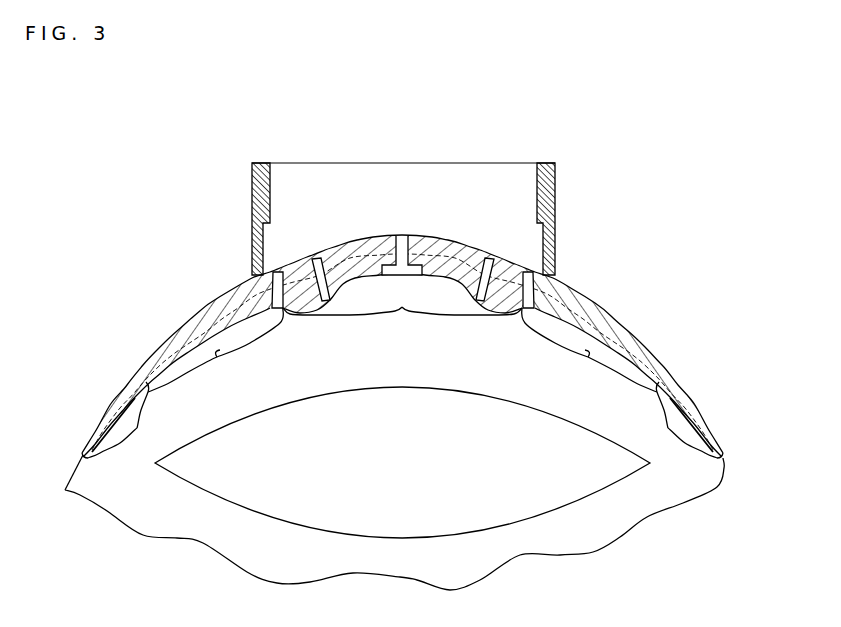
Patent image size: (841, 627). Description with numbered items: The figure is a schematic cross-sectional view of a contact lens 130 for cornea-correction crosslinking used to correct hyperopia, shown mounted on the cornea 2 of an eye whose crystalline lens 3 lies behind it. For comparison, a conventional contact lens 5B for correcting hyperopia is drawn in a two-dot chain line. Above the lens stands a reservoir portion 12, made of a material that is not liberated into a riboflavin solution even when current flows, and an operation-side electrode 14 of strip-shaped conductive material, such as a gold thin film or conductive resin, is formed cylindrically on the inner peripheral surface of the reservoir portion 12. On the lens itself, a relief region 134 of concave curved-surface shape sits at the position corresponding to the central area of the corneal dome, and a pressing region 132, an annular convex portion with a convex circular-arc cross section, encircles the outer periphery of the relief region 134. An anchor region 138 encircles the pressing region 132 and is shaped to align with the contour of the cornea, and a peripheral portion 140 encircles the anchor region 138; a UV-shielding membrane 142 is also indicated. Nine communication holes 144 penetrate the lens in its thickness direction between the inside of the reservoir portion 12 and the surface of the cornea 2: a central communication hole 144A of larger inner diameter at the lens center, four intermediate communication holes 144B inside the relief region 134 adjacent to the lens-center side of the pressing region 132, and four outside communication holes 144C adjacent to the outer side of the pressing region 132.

The cornea 2 is at (282, 325).
The crystalline lens 3 is at (543, 497).
The conventional contact lens for correcting hyperopia 5B is at (638, 363).
The reservoir portion 12 is at (555, 207).
The operation-side electrode 14 is at (270, 188).
The contact lens for correcting hyperopia 130 is at (210, 253).
The pressing region 132 is at (310, 322).
The relief region 134 is at (402, 312).
The anchor region 138 is at (217, 358).
The peripheral portion 140 is at (136, 427).
The UV-shielding membrane 142 is at (113, 421).
The communication holes 144 is at (545, 133).
The central communication hole 144A is at (402, 236).
The intermediate communication holes 144B is at (490, 263).
The outside communication holes 144C is at (533, 275).